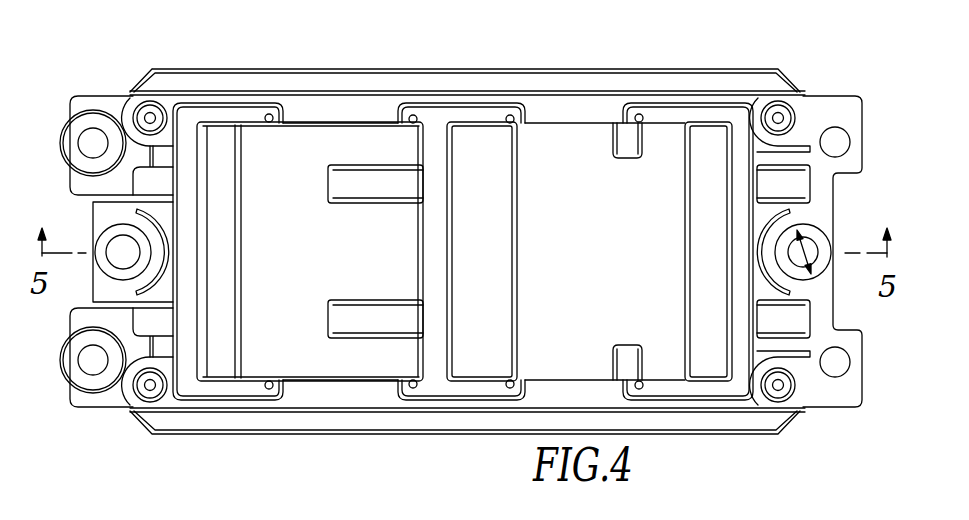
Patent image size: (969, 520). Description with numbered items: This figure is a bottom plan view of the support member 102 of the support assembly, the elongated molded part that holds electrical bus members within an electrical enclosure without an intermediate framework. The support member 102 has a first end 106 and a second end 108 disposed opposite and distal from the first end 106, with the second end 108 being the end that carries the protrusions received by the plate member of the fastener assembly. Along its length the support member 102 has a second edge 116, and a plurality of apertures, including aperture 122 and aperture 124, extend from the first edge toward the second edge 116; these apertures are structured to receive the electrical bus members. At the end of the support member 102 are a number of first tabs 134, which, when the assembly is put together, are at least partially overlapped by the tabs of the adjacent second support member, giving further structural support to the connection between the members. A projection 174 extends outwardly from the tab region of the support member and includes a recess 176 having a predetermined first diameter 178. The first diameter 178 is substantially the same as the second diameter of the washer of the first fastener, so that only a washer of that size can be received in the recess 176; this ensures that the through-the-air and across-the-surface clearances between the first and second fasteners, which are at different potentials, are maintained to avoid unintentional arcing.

The first support member 102 is at (302, 478).
The first end 106 is at (827, 76).
The second end 108 is at (109, 78).
The second edge 116 is at (437, 147).
The aperture 122 is at (580, 133).
The aperture 124 is at (268, 180).
The first tabs 134 is at (80, 105).
The projection 174 is at (824, 240).
The recess 176 is at (822, 228).
The first diameter 178 is at (817, 262).